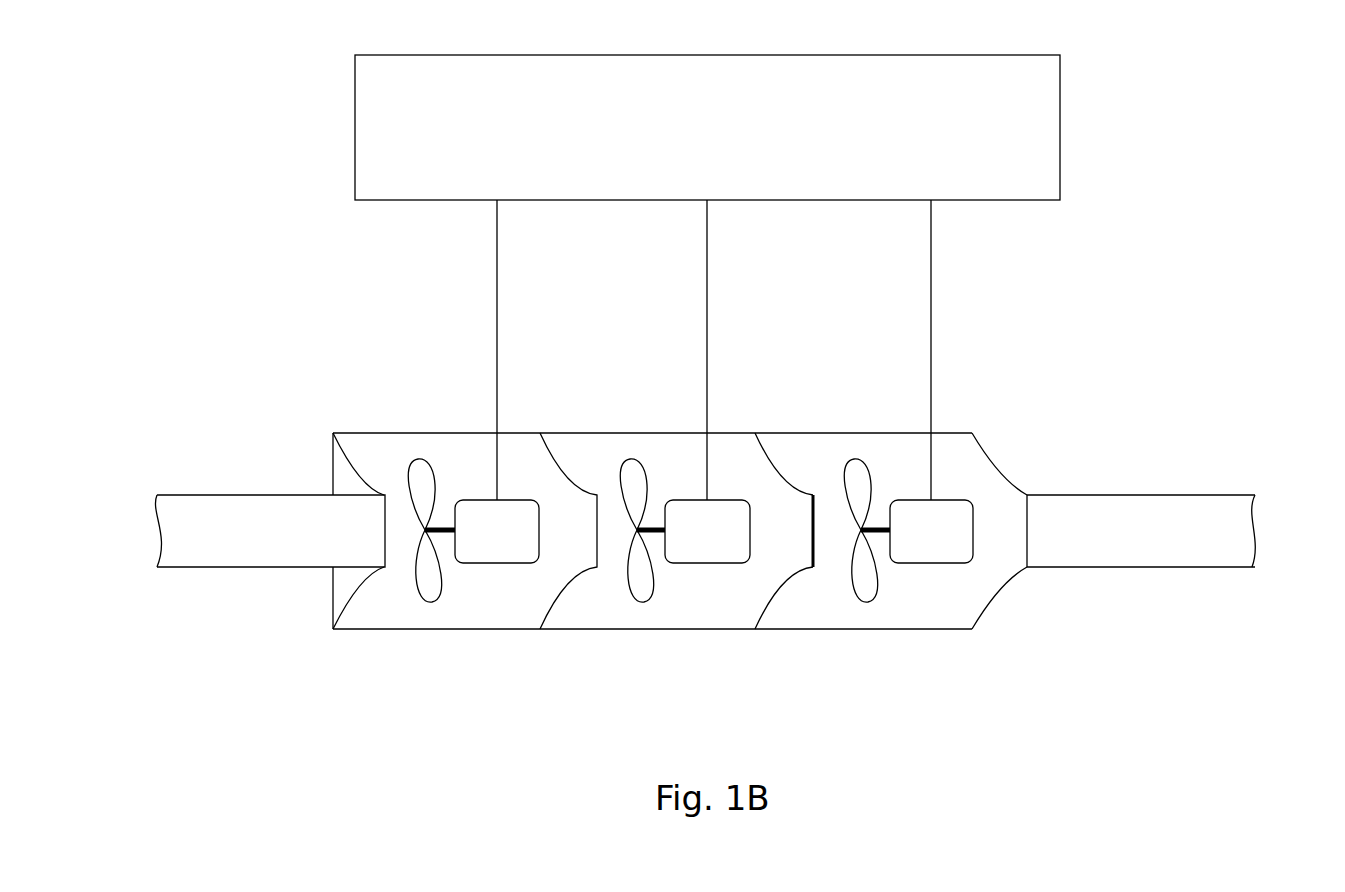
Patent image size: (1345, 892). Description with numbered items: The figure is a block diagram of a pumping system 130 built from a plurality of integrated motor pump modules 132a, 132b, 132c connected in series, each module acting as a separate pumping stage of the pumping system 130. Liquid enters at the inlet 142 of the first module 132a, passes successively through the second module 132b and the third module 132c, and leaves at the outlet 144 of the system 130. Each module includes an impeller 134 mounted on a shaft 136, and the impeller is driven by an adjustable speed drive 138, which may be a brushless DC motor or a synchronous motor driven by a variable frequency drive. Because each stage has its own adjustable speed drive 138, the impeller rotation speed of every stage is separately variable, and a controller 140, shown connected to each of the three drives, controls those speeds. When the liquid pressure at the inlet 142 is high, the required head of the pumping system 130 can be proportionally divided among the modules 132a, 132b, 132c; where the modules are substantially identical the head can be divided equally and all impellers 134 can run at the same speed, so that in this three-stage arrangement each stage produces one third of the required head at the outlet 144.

The pumping system 130 is at (1176, 224).
The first integrated motor pump (IMP) module 132a is at (420, 433).
The second integrated motor pump (IMP) module 132b is at (614, 433).
The third integrated motor pump (IMP) module 132c is at (848, 433).
The impeller 134 is at (852, 578).
The shaft 136 is at (874, 537).
The adjustable speed drive (ASD) 138 is at (953, 543).
The controller 140 is at (731, 133).
The inlet 142 is at (264, 543).
The outlet 144 is at (1131, 538).